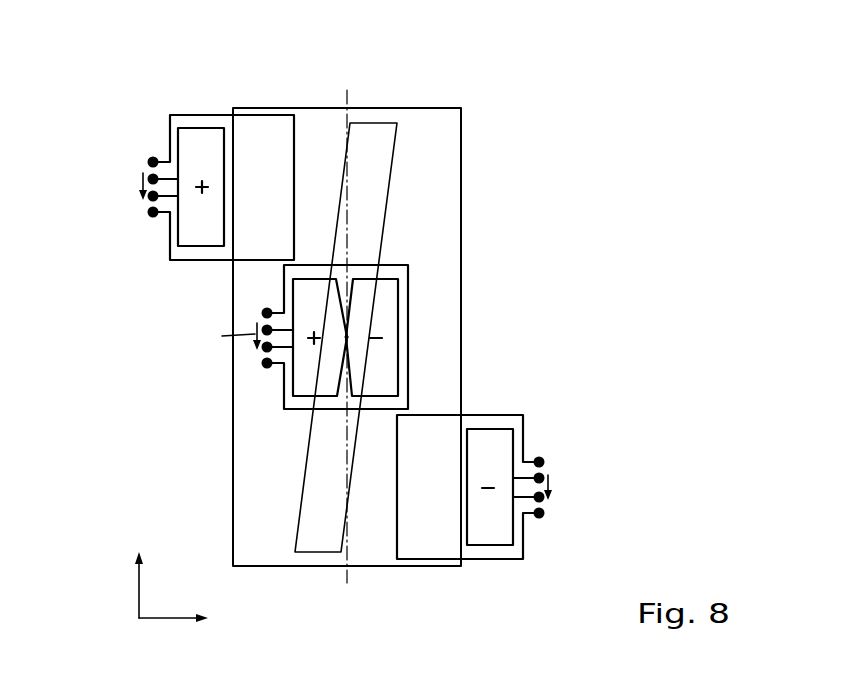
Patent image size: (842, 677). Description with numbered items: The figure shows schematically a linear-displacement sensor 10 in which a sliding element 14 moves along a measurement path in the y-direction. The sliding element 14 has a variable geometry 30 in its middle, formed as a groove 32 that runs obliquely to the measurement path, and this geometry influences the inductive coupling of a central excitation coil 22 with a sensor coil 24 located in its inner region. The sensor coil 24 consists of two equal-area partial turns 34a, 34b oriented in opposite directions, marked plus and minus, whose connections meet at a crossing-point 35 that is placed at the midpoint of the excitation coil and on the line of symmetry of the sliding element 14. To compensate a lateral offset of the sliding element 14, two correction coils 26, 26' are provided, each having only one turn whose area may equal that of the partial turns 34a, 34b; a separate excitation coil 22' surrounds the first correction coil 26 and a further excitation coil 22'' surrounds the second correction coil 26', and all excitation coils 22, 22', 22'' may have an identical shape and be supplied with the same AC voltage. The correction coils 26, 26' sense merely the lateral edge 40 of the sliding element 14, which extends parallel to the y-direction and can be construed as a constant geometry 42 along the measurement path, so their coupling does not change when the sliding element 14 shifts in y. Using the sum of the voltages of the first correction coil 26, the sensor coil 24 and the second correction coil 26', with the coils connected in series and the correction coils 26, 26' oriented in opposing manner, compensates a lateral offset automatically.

The linear-displacement sensor 10 is at (509, 116).
The sliding element 14 is at (310, 118).
The excitation coil 22 is at (346, 351).
The excitation coil 22' is at (221, 154).
The excitation coil 22'' is at (498, 466).
The sensor coil 24 is at (305, 396).
The correction coil 26 is at (186, 153).
The correction coil 26' is at (506, 459).
The variable geometry 30 is at (364, 140).
The groove 32 is at (387, 128).
The partial turn 34a is at (303, 380).
The partial turn 34b is at (388, 300).
The crossing-point 35 is at (348, 337).
The lateral edge 40 is at (461, 185).
The constant geometry 42 is at (506, 156).